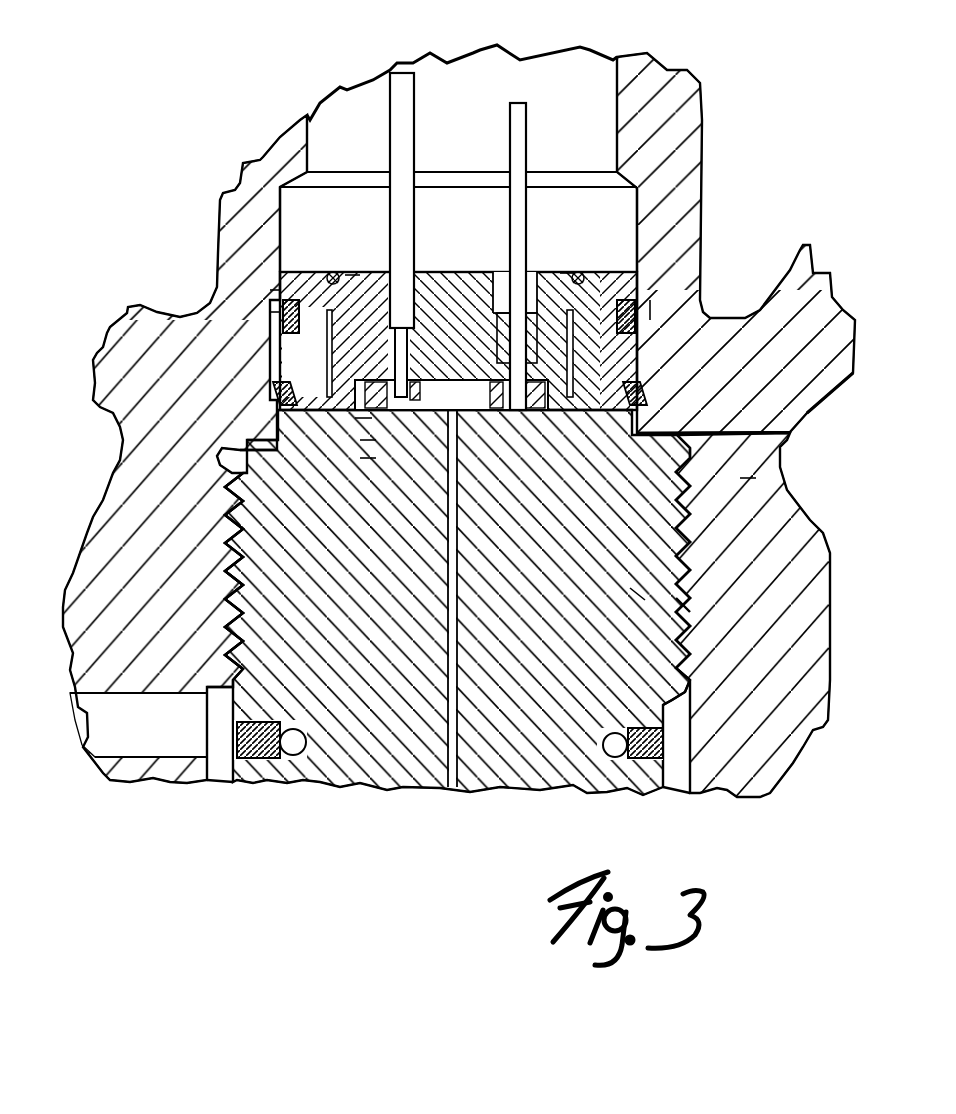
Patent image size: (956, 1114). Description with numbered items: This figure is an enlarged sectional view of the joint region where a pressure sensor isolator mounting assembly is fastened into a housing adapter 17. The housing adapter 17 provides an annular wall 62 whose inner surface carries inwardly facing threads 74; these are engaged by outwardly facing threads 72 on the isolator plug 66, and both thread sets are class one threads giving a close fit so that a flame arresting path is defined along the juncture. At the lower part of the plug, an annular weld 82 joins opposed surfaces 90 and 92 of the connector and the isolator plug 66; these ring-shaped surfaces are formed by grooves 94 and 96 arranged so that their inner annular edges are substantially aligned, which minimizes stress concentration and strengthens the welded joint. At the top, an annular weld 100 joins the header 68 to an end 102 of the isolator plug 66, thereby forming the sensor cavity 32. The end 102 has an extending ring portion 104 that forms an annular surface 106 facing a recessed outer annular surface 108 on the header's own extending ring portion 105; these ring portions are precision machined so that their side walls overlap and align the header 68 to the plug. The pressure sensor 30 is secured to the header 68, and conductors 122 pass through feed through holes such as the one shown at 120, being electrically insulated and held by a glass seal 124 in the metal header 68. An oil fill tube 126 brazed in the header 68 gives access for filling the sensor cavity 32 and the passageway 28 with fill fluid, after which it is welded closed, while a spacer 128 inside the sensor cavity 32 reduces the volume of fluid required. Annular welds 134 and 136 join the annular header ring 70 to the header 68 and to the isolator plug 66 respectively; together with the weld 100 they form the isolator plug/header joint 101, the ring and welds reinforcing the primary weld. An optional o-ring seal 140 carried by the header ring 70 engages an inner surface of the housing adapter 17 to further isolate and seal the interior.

The housing adapter 17 is at (806, 416).
The passageway 28 is at (705, 525).
The pressure sensor 30 is at (447, 271).
The sensor cavity 32 is at (372, 270).
The annular wall 62 is at (790, 708).
The isolator plug 66 is at (637, 593).
The header 68 is at (550, 380).
The annular header ring 70 is at (266, 290).
The outwardly facing threads 72 is at (702, 601).
The inwardly facing threads 74 is at (232, 574).
The annular weld 82 is at (225, 737).
The opposed surface 90 is at (215, 690).
The opposed surface 92 is at (190, 779).
The groove 94 is at (227, 673).
The groove 96 is at (240, 616).
The annular weld 100 is at (258, 411).
The isolator plug/header joint 101 is at (272, 312).
The end 102 is at (430, 271).
The extending ring portion 104 is at (368, 440).
The extending ring portion 105 is at (352, 274).
The annular surface 106 is at (282, 380).
The recessed outer annular surface 108 is at (365, 418).
The feed through hole 120 is at (533, 271).
The conductors 122 is at (527, 116).
The glass seal 124 is at (485, 280).
The oil fill tube 126 is at (391, 80).
The spacer 128 is at (368, 458).
The annular weld 134 is at (331, 258).
The annular weld 136 is at (280, 406).
The o-ring seal 140 is at (264, 296).